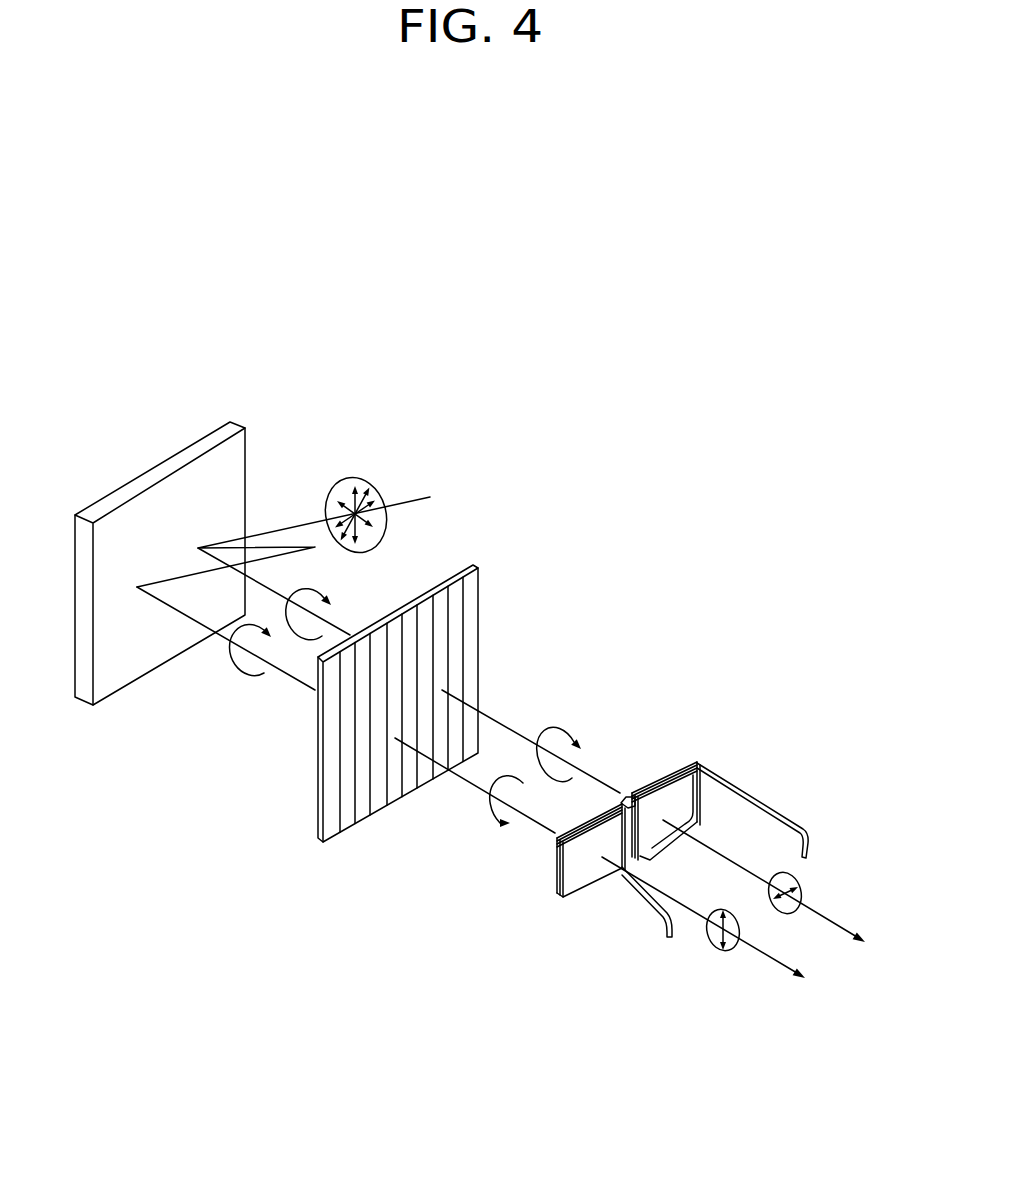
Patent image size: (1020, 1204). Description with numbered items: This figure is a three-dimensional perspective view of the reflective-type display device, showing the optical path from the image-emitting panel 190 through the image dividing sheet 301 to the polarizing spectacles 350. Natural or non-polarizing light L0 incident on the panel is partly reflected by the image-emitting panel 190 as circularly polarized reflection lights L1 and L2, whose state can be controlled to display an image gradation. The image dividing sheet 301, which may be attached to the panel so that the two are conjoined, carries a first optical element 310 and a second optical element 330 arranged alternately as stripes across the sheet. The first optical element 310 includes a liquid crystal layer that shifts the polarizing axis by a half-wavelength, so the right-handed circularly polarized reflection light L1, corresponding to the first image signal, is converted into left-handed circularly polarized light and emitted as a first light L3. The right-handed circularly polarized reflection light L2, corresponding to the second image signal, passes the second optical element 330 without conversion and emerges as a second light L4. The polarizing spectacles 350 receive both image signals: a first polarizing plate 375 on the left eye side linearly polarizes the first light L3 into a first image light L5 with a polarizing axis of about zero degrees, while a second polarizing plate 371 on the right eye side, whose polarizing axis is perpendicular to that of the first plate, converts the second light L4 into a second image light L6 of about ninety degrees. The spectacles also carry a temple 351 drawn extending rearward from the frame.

The image-emitting panel 190 is at (251, 410).
The image dividing sheet 301 is at (429, 705).
The first optical element 310 is at (400, 798).
The second optical element 330 is at (445, 773).
The polarizing spectacles 350 is at (711, 801).
The first polarizing plate 375 is at (601, 805).
The second polarizing plate 371 is at (687, 762).
The temple 351 is at (715, 835).
The non-polarizing light L0 is at (288, 547).
The reflection light L1 is at (298, 682).
The reflection light L2 is at (338, 630).
The first light L3 is at (537, 822).
The second light L4 is at (520, 740).
The first image light L5 is at (760, 953).
The second image light L6 is at (825, 913).